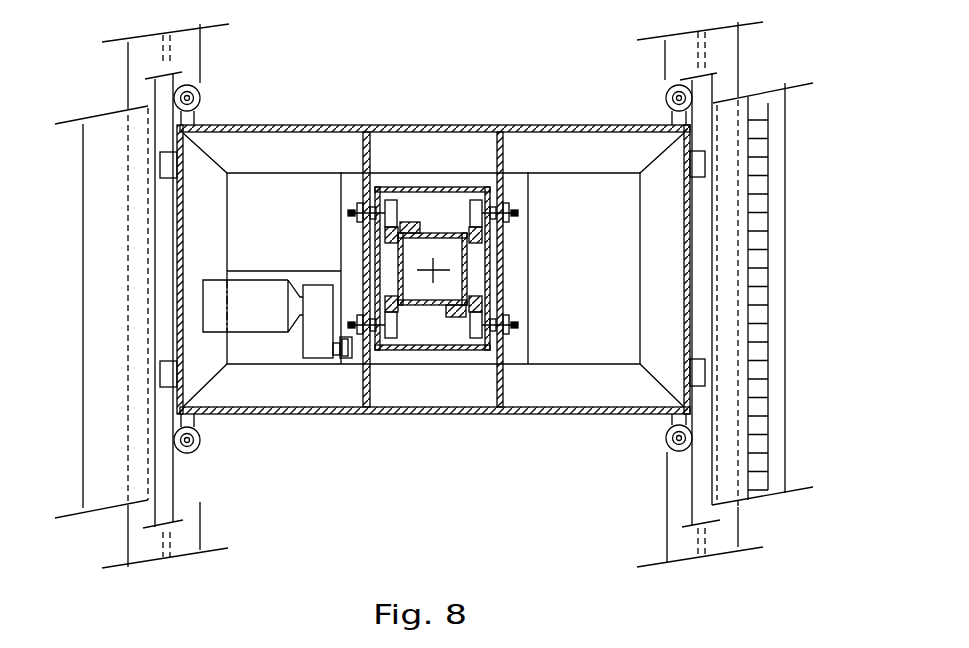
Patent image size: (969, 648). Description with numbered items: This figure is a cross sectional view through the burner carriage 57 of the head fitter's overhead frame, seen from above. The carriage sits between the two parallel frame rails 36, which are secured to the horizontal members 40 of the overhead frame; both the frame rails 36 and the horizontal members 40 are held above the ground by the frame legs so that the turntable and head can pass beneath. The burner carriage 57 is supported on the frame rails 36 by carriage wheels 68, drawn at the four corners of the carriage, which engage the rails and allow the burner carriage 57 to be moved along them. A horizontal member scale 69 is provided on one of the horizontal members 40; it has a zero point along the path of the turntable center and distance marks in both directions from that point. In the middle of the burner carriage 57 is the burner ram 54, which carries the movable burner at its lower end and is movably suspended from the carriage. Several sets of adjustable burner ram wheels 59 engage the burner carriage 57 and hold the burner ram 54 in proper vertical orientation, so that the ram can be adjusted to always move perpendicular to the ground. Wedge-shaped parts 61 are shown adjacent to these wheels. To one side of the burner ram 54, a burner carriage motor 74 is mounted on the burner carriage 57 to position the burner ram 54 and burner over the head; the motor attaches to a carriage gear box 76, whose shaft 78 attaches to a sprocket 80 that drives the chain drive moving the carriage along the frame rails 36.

The frame rails 36 is at (175, 500).
The horizontal members 40 is at (128, 80).
The burner ram 54 is at (467, 267).
The burner carriage 57 is at (532, 125).
The adjustable burner ram wheels 59 is at (388, 198).
The spacer wedge 61 is at (415, 223).
The carriage wheels 68 is at (202, 98).
The horizontal member scale 69 is at (770, 282).
The burner carriage motor 74 is at (258, 280).
The carriage gear box 76 is at (317, 283).
The shaft 78 is at (335, 358).
The sprocket 80 is at (346, 358).